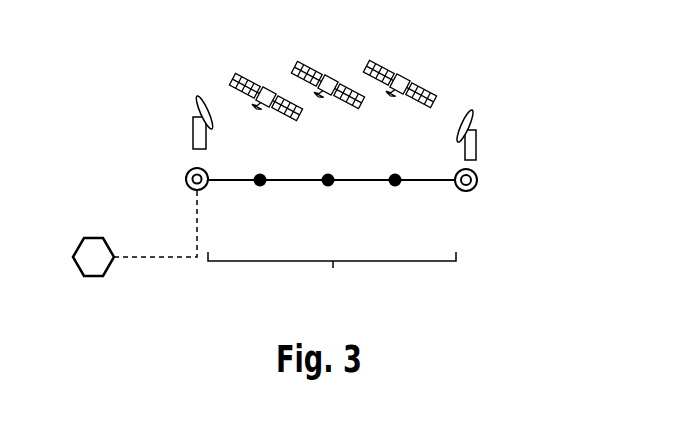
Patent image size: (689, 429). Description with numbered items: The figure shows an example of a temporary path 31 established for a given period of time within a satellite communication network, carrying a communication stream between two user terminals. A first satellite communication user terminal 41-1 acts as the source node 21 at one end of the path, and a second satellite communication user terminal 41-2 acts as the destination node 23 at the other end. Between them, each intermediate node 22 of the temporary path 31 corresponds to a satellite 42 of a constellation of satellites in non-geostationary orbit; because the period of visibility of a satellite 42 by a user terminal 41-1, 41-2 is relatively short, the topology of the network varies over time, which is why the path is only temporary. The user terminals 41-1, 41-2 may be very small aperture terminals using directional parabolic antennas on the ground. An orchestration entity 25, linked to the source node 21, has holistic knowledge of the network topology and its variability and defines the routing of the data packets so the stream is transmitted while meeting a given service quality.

The source node 21 is at (193, 191).
The intermediate node 22 is at (326, 187).
The destination node 23 is at (474, 190).
The orchestration entity 25 is at (95, 277).
The temporary path 31 is at (332, 274).
The first satellite communication user terminal 41-1 is at (193, 128).
The second satellite communication user terminal 41-2 is at (476, 131).
The satellite 42 is at (310, 70).